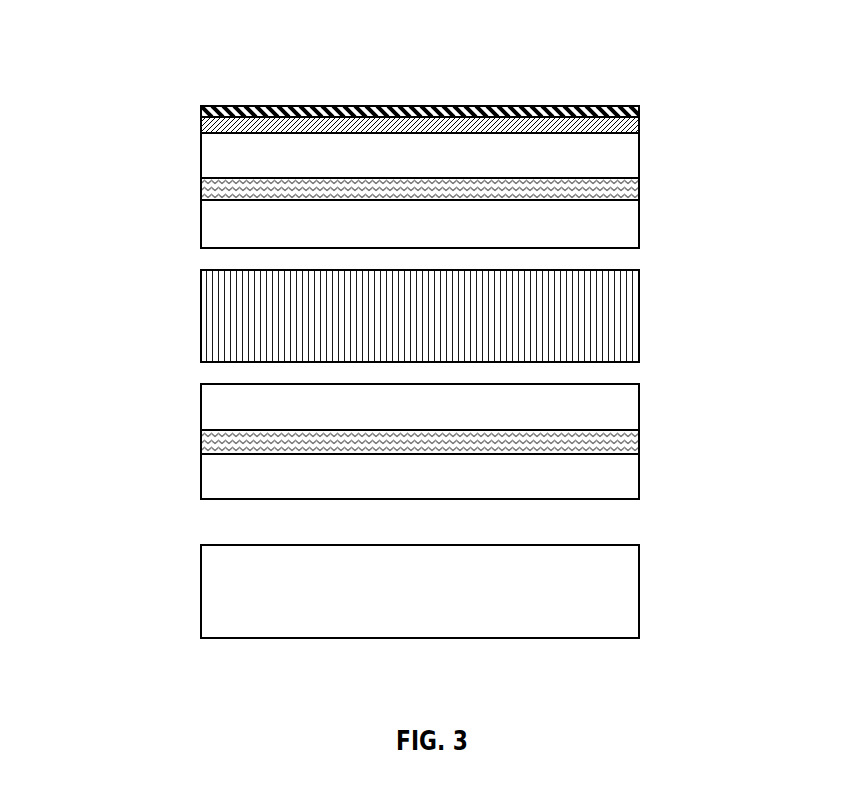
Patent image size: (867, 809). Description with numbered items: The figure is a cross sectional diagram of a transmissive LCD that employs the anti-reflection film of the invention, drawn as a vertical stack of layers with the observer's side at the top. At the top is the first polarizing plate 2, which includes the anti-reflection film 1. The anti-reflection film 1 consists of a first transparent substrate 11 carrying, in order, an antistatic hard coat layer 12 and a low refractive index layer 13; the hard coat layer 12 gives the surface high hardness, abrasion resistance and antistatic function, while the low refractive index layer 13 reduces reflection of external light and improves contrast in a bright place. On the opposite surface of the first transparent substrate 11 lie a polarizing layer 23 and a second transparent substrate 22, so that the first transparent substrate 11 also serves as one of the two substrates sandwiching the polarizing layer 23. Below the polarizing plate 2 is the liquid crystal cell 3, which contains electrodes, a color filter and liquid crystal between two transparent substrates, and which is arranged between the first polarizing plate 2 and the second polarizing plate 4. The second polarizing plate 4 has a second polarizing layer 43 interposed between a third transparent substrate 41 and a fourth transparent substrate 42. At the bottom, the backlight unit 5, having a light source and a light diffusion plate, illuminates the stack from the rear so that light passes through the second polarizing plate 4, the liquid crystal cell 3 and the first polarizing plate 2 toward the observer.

The anti-reflection film 1 is at (379, 109).
The polarizing plate 2 is at (416, 160).
The liquid crystal cell 3 is at (615, 343).
The second polarizing plate 4 is at (389, 455).
The backlight unit 5 is at (615, 600).
The first transparent substrate 11 is at (240, 156).
The antistatic hard coat layer 12 is at (240, 125).
The low refractive index layer 13 is at (236, 109).
The second transparent substrate 22 is at (245, 225).
The polarizing layer 23 is at (240, 192).
The third transparent substrate 41 is at (243, 403).
The fourth transparent substrate 42 is at (247, 485).
The second polarizing layer 43 is at (240, 441).